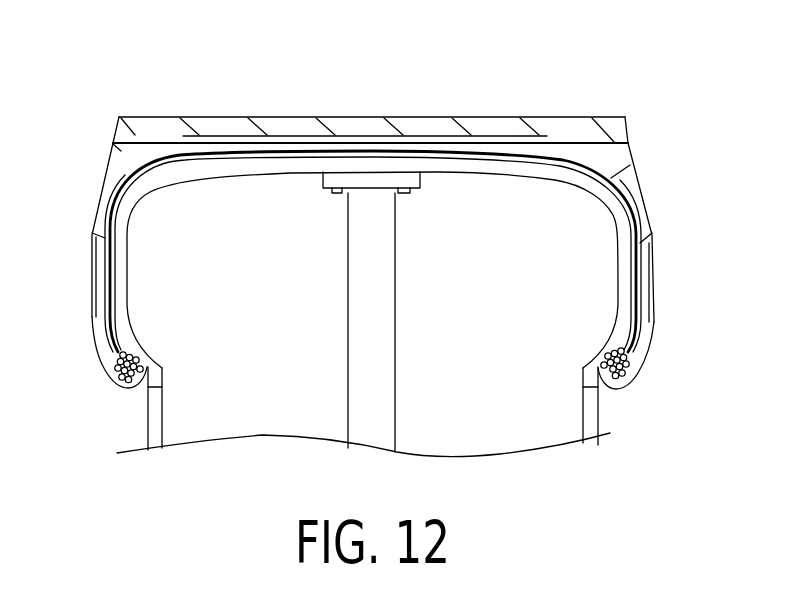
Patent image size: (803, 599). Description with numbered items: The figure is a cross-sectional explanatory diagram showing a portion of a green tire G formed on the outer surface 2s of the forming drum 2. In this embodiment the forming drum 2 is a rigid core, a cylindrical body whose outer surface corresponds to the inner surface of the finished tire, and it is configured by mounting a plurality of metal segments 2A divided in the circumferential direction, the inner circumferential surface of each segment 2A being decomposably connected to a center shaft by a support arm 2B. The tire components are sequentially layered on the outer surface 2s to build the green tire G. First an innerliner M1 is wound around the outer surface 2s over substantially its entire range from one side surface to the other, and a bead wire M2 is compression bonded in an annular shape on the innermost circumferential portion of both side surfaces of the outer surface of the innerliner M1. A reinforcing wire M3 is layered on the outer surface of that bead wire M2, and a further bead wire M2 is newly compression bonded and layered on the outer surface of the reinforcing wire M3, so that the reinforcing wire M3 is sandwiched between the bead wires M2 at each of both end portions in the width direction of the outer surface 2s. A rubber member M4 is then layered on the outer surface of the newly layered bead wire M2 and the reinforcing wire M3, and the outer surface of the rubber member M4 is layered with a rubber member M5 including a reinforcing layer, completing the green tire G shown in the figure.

The green tire G is at (213, 116).
The rubber member including a reinforcing layer M5 is at (353, 117).
The outer surface 2s is at (442, 118).
The rubber member M4 is at (561, 153).
The innerliner M1 is at (608, 192).
The reinforcing wire M3 is at (628, 268).
The forming drum 2 is at (256, 175).
The segment 2A is at (437, 170).
The support arm 2B is at (363, 358).
The bead wire M2 is at (117, 370).